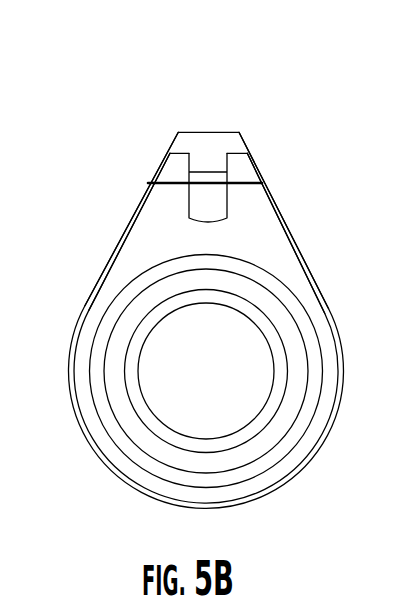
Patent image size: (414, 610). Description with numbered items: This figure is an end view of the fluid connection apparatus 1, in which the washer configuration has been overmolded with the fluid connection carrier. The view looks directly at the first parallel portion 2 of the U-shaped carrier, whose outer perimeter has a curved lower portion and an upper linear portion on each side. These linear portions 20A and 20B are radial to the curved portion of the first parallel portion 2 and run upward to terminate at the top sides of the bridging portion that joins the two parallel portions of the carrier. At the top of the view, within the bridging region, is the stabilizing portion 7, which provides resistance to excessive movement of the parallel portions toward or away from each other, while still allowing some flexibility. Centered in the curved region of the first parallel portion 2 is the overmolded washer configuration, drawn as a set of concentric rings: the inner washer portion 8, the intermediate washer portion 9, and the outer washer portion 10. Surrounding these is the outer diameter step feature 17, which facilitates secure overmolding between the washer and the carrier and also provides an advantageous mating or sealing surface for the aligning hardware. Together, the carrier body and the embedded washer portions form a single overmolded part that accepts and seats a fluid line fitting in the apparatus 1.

The fluid connection apparatus 1 is at (273, 98).
The first parallel portion 2 is at (155, 233).
The stabilizing portion 7 is at (205, 175).
The inner washer portion 8 is at (143, 333).
The intermediate washer portion 9 is at (120, 397).
The outer washer portion 10 is at (133, 452).
The outer diameter step feature 17 is at (280, 277).
The linear portion 20A is at (277, 203).
The linear portion 20B is at (110, 258).